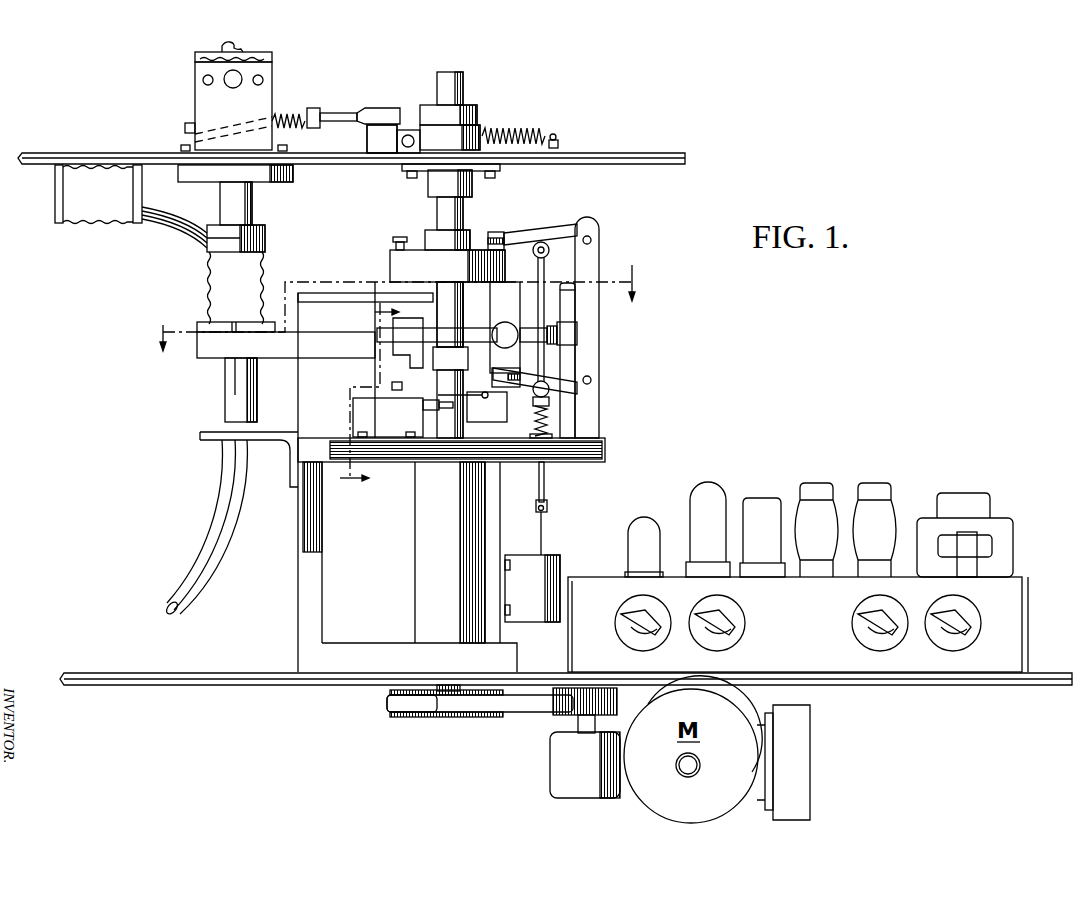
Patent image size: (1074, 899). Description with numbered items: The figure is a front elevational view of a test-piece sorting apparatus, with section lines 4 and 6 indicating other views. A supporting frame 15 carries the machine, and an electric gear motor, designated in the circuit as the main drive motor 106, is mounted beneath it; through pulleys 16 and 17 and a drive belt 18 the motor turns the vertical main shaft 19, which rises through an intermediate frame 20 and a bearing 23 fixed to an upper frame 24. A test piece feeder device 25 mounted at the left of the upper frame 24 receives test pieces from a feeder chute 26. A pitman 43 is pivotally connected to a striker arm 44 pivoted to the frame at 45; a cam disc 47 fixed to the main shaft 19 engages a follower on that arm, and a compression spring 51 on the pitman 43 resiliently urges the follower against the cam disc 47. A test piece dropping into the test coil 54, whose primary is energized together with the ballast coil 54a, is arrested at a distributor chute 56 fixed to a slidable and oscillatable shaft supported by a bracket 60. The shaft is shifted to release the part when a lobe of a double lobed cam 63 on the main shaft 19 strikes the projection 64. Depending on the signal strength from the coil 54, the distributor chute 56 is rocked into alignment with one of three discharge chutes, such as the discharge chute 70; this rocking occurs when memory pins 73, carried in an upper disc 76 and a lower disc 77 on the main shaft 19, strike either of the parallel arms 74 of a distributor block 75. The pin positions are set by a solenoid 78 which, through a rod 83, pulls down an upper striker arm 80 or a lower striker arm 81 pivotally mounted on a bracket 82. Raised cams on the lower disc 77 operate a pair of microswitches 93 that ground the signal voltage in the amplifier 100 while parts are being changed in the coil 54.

The supporting frame 15 is at (190, 686).
The pulley 16 is at (560, 718).
The pulley 17 is at (400, 714).
The drive belt 18 is at (513, 707).
The main shaft 19 is at (465, 96).
The intermediate frame 20 is at (606, 450).
The bearing 23 is at (473, 185).
The upper frame 24 is at (40, 162).
The test piece feeder device 25 is at (195, 72).
The feeder chute 26 is at (222, 45).
The pitman 43 is at (346, 110).
The striker arm 44 is at (367, 138).
The pivot 45 is at (380, 150).
The cam disc 47 is at (478, 119).
The compression spring 51 is at (283, 113).
The test coil 54 is at (214, 280).
The ballast coil 54a is at (78, 206).
The distributor chute 56 is at (232, 387).
The bracket 60 is at (338, 428).
The double lobed cam 63 is at (450, 370).
The projection 64 is at (395, 370).
The discharge chute 70 is at (224, 510).
The memory pins 73 is at (398, 236).
The arms 74 is at (473, 380).
The distributor block 75 is at (517, 311).
The upper disc 76 is at (458, 279).
The lower disc 77 is at (500, 418).
The solenoid 78 is at (545, 594).
The upper striker arm 80 is at (558, 236).
The lower striker arm 81 is at (575, 383).
The bracket 82 is at (600, 308).
The rod 83 is at (546, 480).
The microswitches 93 is at (405, 428).
The amplifier 100 is at (806, 668).
The main drive motor 106 is at (790, 702).
The section line 4- 4 is at (399, 308).
The section line 6- 6 is at (369, 403).